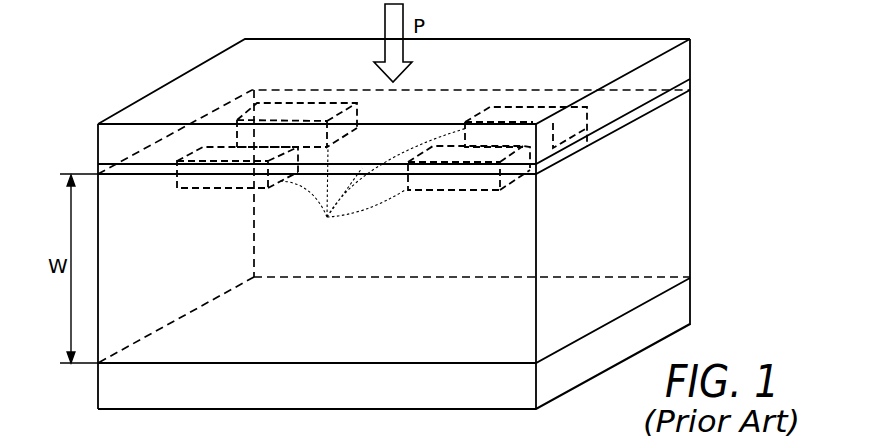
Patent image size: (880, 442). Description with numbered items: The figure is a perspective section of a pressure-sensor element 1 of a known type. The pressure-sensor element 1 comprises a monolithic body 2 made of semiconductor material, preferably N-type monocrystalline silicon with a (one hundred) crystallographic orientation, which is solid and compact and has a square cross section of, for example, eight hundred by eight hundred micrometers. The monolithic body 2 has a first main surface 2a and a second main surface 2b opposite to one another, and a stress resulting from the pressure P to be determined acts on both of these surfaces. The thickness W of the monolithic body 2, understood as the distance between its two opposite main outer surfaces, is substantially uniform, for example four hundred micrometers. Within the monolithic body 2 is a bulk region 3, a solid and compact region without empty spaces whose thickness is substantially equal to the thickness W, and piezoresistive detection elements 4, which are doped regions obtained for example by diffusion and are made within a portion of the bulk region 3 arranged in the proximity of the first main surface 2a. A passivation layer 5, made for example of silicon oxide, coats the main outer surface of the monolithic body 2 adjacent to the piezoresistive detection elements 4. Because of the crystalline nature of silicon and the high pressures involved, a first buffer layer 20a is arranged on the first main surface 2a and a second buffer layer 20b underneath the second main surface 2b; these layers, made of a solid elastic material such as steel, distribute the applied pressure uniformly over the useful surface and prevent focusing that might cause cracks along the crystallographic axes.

The pressure-sensor element 1 is at (146, 68).
The monolithic body 2 is at (683, 187).
The first main surface 2a is at (162, 167).
The second main surface 2b is at (143, 364).
The bulk region 3 is at (487, 265).
The piezoresistive detection elements 4 is at (373, 184).
The passivation layer 5 is at (670, 95).
The first buffer layer 20a is at (672, 60).
The second buffer layer 20b is at (678, 297).